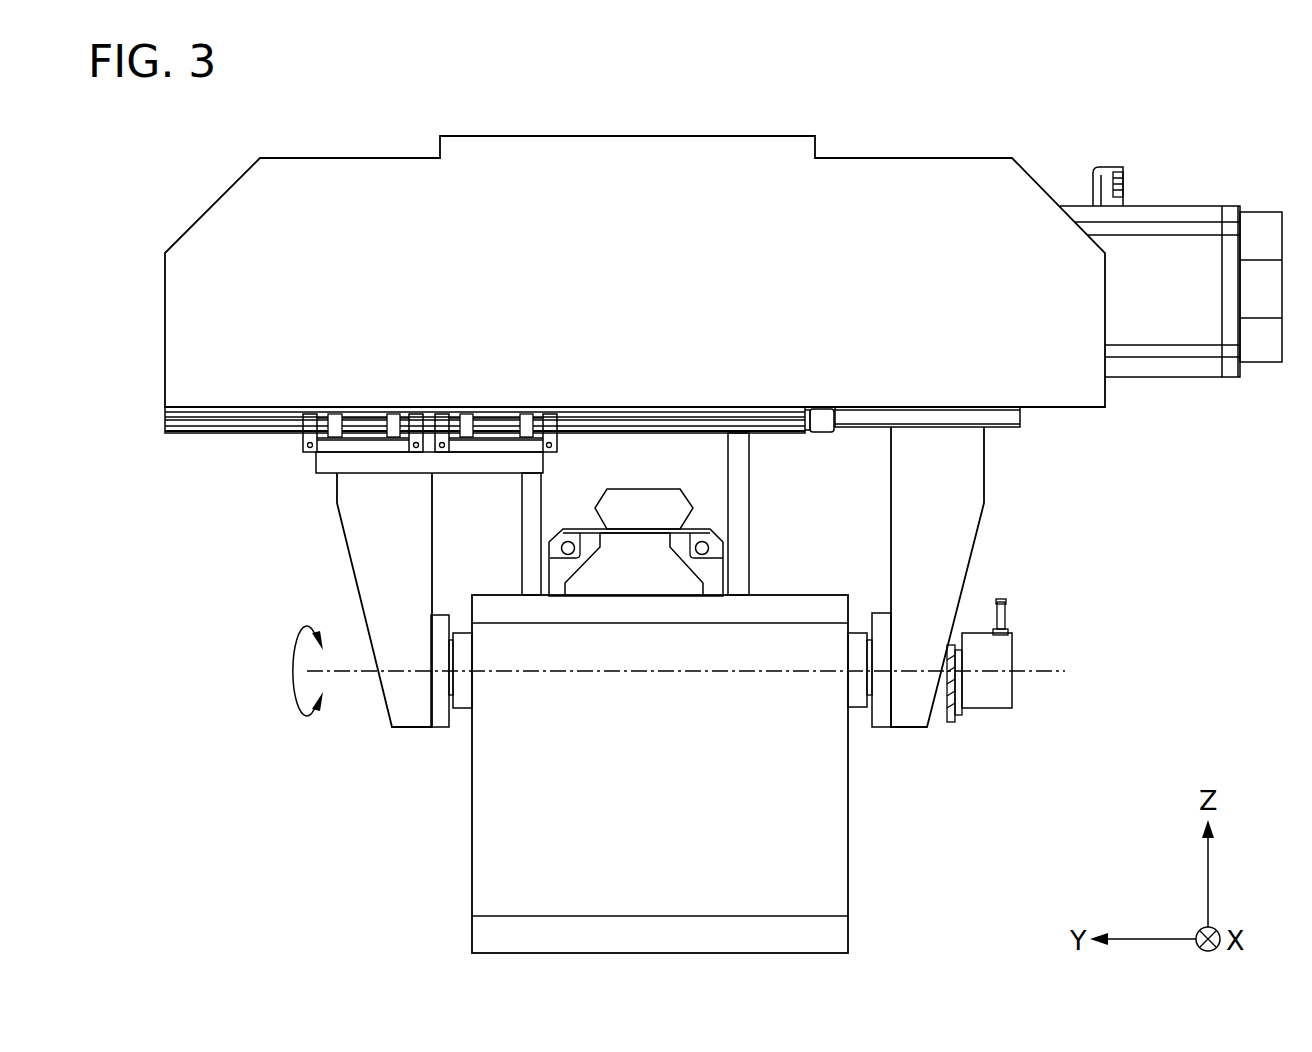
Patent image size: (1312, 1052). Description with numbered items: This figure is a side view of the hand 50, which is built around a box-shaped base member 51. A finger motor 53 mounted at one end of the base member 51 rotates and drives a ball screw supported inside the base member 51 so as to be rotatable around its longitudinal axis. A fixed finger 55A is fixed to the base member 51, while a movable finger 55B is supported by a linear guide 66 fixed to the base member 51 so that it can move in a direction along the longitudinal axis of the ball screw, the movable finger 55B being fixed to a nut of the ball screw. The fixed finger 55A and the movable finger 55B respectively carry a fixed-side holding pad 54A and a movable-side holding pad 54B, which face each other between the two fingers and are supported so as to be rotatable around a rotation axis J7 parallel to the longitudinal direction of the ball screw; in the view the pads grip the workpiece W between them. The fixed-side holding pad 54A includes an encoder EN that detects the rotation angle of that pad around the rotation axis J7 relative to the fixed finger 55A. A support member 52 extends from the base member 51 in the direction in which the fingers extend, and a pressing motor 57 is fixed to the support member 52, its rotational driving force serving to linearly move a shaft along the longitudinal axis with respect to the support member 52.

The hand 50 is at (1066, 122).
The base member 51 is at (895, 158).
The support member 52 is at (750, 473).
The finger motor 53 is at (1263, 362).
The fixed-side holding pad 54A is at (858, 708).
The movable-side holding pad 54B is at (455, 709).
The fixed finger 55A is at (908, 729).
The movable finger 55B is at (381, 700).
The pressing motor 57 is at (690, 526).
The linear guide 66 is at (230, 434).
The encoder EN is at (990, 712).
The rotation axis J7 is at (1040, 672).
The workpiece W is at (848, 887).